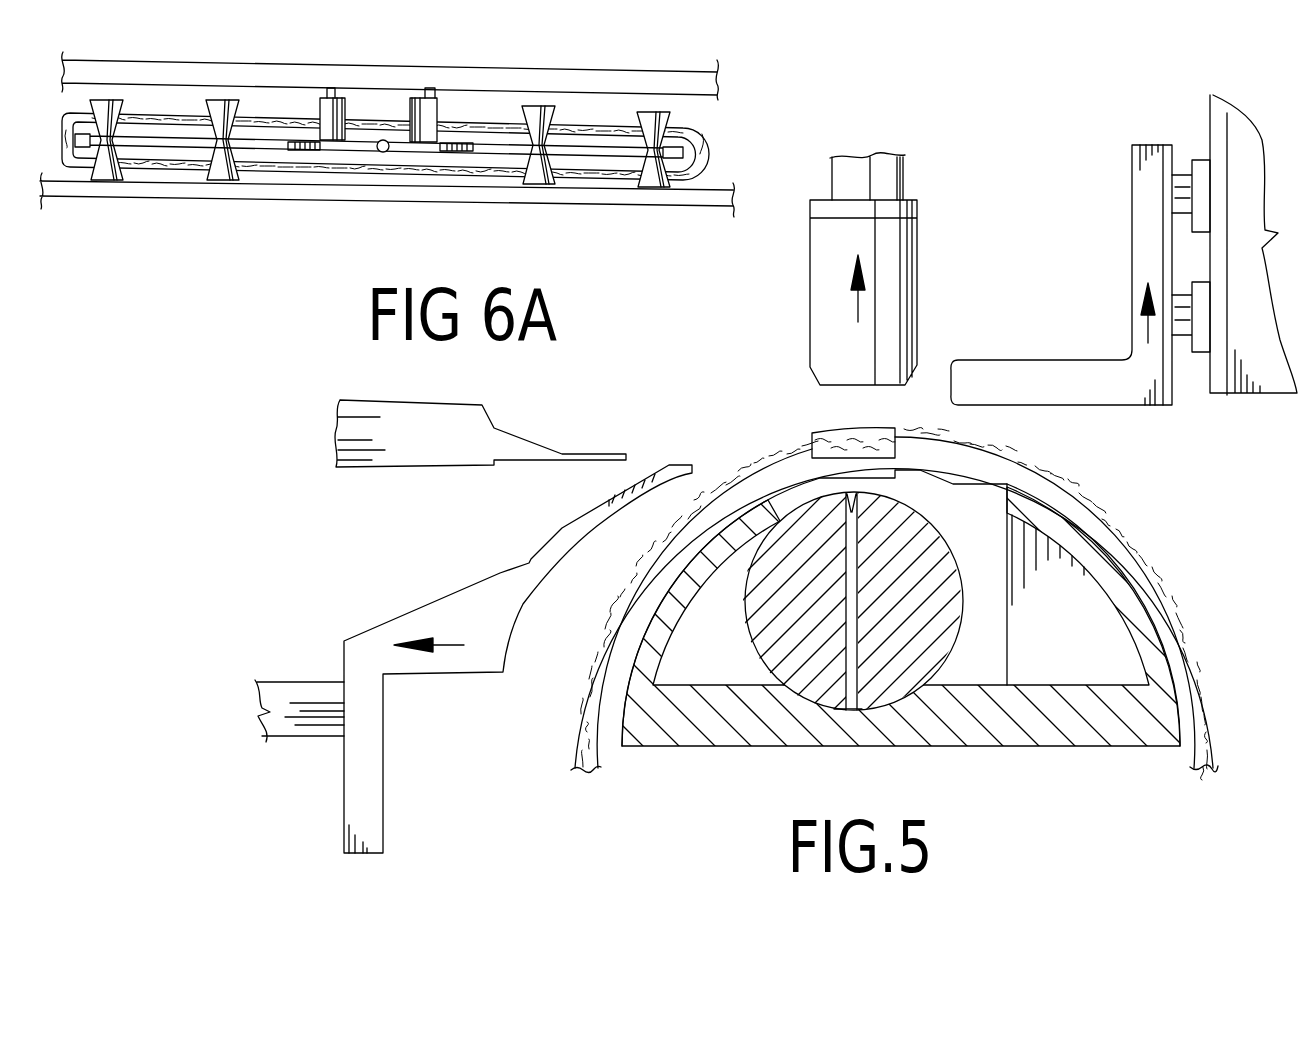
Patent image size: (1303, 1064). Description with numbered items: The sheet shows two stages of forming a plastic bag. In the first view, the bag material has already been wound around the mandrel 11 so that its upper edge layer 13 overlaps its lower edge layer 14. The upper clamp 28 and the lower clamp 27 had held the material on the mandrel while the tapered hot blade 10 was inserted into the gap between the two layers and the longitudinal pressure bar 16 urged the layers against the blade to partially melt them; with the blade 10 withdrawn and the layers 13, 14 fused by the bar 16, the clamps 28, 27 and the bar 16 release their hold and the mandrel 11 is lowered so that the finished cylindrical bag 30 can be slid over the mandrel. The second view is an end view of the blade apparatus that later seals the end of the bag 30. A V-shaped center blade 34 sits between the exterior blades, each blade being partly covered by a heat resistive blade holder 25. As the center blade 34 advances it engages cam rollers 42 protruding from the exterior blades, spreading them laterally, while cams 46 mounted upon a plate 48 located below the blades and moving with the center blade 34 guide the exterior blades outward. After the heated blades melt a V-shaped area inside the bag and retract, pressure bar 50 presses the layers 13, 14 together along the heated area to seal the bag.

In FIG. 5, the tapered hot blade 10 is at (334, 419).
In FIG. 5, the mandrel 11 is at (1093, 746).
In FIG. 5, the upper edge layer 13 is at (880, 416).
In FIG. 5, the lower edge layer 14 is at (793, 458).
In FIG. 5, the longitudinal pressure bar 16 is at (910, 247).
In FIG. 6A, the heat resistive blade holder 25 is at (167, 147).
In FIG. 5, the lower clamp 27 is at (505, 573).
In FIG. 5, the upper clamp 28 is at (1138, 200).
In FIG. 6A, the cylindrical bag 30 is at (710, 153).
In FIG. 5, the cylindrical bag 30 is at (1203, 632).
In FIG. 6A, the V-shaped center blade 34 is at (389, 151).
In FIG. 6A, the cam rollers 42 is at (322, 108).
In FIG. 6A, the cams 46 is at (100, 172).
In FIG. 6A, the plate 48 is at (390, 198).
In FIG. 6A, the pressure bar 50 is at (577, 82).